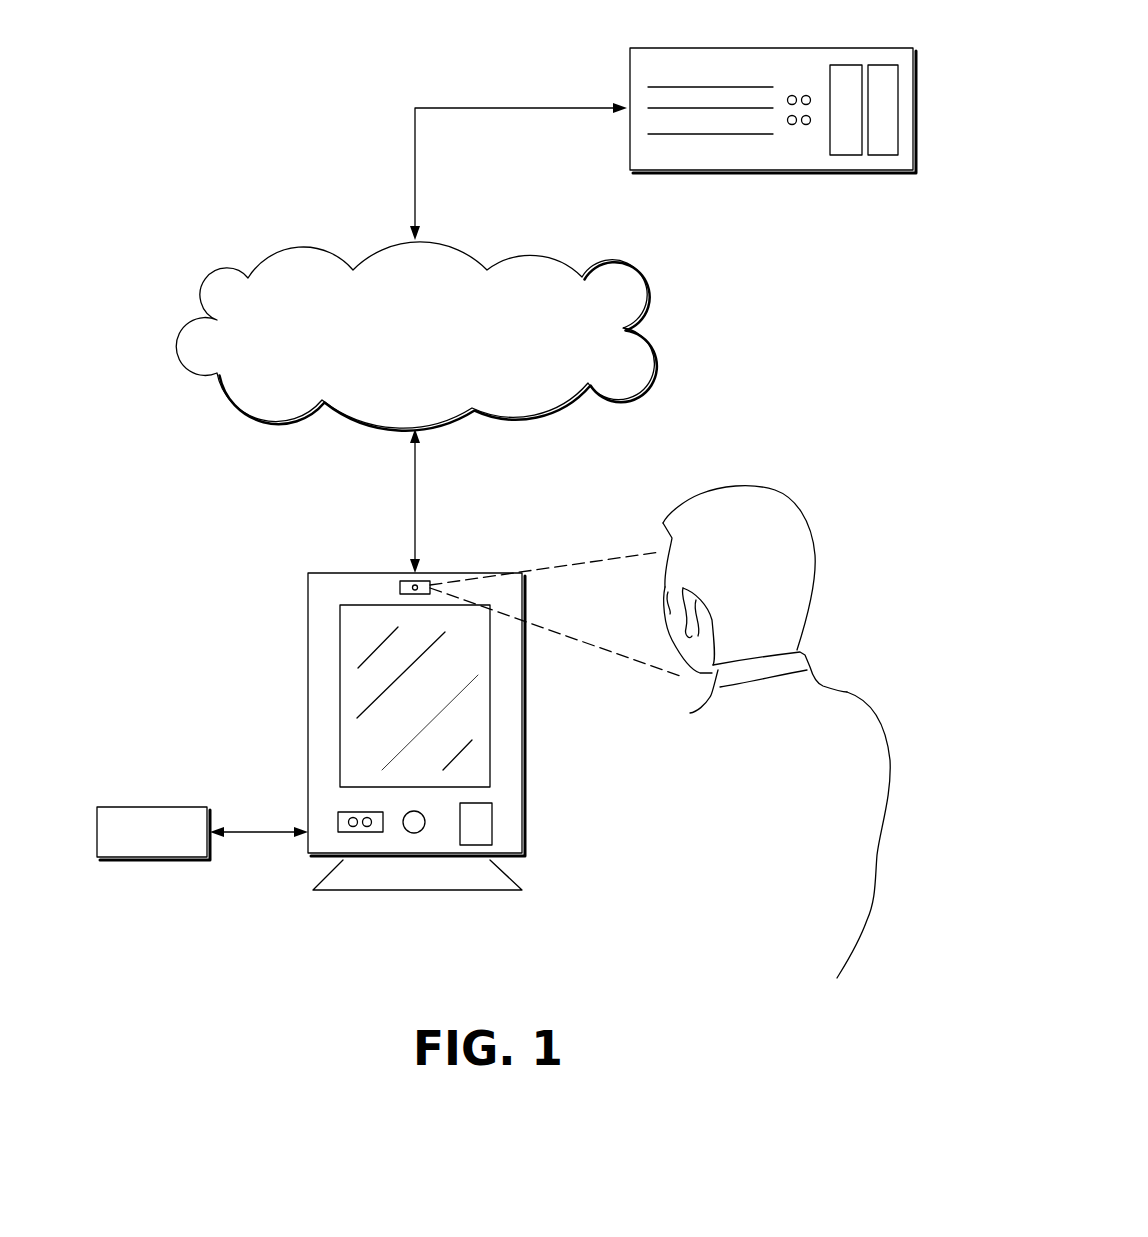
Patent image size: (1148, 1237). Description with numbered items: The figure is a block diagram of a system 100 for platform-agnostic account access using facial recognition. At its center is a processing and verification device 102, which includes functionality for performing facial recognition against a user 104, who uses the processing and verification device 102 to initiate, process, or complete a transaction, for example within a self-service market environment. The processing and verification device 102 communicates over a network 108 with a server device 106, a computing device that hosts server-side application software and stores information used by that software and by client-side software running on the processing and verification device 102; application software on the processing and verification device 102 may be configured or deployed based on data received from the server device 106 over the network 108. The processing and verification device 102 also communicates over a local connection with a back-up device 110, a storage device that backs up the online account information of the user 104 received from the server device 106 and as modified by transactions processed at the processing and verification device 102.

The system 100 is at (176, 111).
The processing and verification device 102 is at (349, 573).
The user 104 is at (845, 690).
The server device 106 is at (812, 48).
The network 108 is at (550, 257).
The back-up device 110 is at (150, 807).